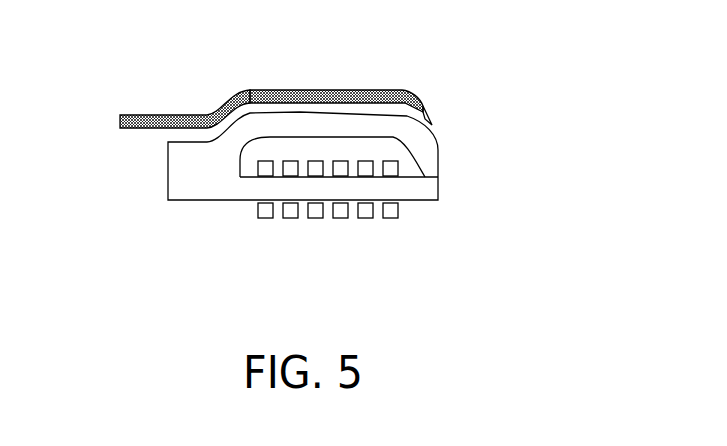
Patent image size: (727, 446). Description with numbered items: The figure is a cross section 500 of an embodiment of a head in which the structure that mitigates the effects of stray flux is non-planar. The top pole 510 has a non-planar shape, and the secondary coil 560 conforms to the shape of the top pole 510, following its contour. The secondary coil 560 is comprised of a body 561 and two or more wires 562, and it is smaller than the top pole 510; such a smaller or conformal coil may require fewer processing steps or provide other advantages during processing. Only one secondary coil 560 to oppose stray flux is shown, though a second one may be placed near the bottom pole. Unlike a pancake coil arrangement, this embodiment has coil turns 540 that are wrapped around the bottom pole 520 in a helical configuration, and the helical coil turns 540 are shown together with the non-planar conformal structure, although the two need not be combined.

The cross section 500 is at (505, 252).
The top pole 510 is at (442, 162).
The bottom pole 520 is at (167, 178).
The coil turns 540 is at (290, 219).
The secondary coil 560 is at (428, 110).
The body 561 is at (290, 91).
The wires 562 is at (159, 115).